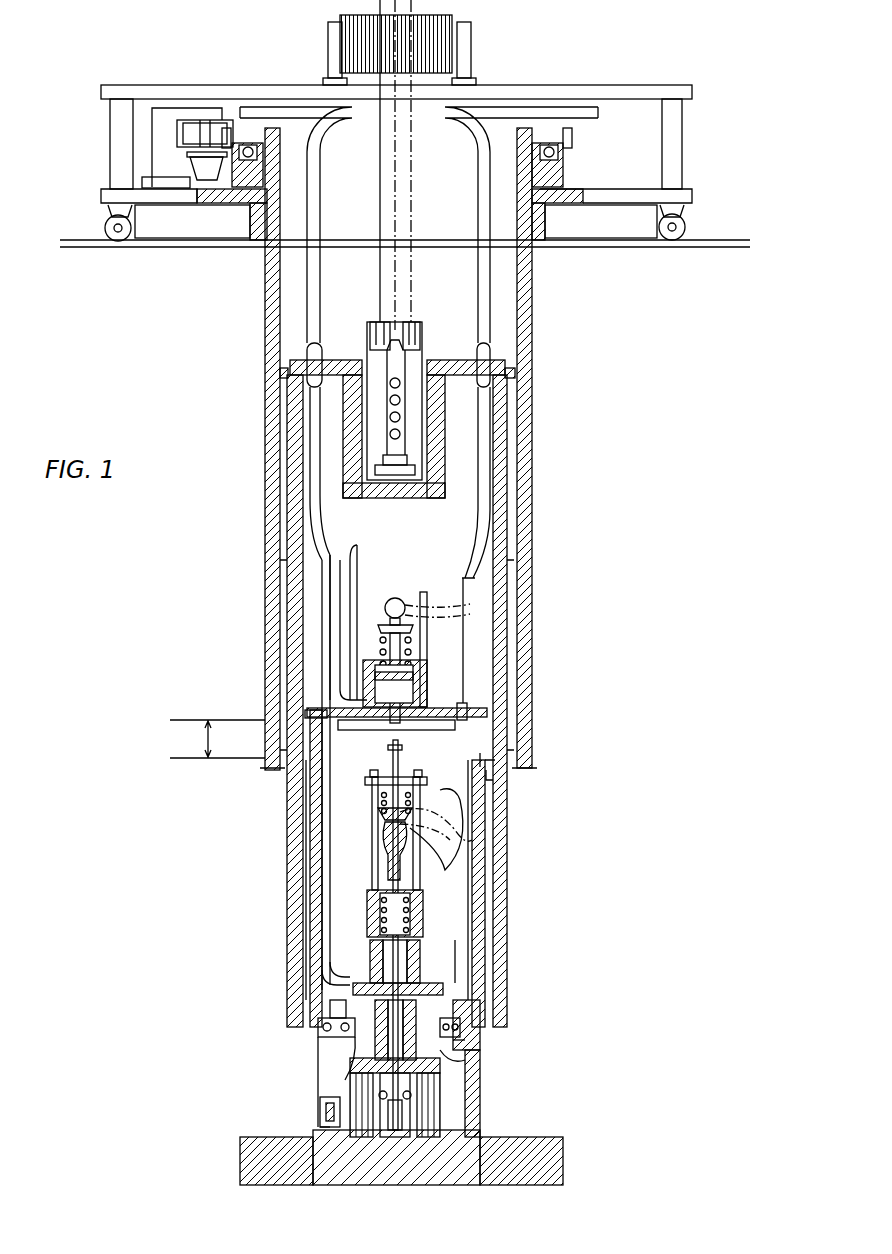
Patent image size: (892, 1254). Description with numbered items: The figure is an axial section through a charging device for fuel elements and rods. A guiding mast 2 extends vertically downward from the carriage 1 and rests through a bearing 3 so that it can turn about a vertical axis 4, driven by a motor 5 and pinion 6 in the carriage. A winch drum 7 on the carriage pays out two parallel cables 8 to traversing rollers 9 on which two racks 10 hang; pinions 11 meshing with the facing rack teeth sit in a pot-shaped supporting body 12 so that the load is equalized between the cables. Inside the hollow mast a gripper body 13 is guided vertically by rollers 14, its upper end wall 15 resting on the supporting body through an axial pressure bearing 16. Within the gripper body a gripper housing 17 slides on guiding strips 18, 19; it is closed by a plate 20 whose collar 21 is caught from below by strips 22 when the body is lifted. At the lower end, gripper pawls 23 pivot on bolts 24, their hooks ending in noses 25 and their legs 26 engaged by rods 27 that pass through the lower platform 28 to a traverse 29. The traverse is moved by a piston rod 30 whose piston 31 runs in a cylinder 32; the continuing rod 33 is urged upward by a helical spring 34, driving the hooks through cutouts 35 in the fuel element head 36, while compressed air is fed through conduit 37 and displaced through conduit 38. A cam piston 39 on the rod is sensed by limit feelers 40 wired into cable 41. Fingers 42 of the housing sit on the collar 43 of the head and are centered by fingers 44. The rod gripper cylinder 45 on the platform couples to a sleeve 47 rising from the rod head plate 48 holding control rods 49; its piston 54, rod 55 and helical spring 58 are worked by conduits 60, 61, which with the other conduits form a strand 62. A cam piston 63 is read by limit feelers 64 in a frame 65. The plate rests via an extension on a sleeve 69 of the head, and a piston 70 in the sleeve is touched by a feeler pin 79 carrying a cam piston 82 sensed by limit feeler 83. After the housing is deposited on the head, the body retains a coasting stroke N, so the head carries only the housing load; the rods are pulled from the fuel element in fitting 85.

The carriage 1 is at (680, 92).
The guiding mast 2 is at (532, 318).
The bearing 3 is at (565, 162).
The vertical axis 4 is at (395, 152).
The motor 5 is at (207, 180).
The pinion 6 is at (205, 133).
The drum 7 is at (455, 18).
The cables 8 is at (380, 222).
The traversing rollers 9 is at (378, 322).
The racks 10 is at (380, 485).
The pinions 11 is at (402, 434).
The supporting body 12 is at (415, 498).
The gripper body 13 is at (483, 830).
The rollers 14 is at (530, 376).
The upper end wall 15 is at (330, 366).
The axial pressure bearing 16 is at (440, 366).
The gripper housing 17 is at (486, 905).
The guiding strip 18 is at (488, 925).
The guiding strip 19 is at (475, 878).
The plate 20 is at (470, 706).
The collar 21 is at (468, 716).
The strips 22 is at (510, 790).
The gripper pawls 23 is at (330, 1045).
The bolts 24 is at (320, 1032).
The noses 25 is at (320, 1106).
The legs 26 is at (340, 1060).
The rods 27 is at (345, 975).
The lower platform 28 is at (340, 1010).
The traverse 29 is at (396, 743).
The piston rod 30 is at (415, 706).
The piston 31 is at (414, 676).
The cylinder 32 is at (375, 700).
The rod 33 is at (412, 653).
The helical spring 34 is at (365, 680).
The cutouts 35 is at (320, 1122).
The fuel element head 36 is at (470, 1173).
The conduit 37 is at (340, 630).
The conduit 38 is at (352, 652).
The cam piston 39 is at (395, 598).
The limit feelers 40 is at (423, 598).
The cable 41 is at (490, 525).
The fingers 42 is at (480, 1088).
The collar 43 is at (480, 1100).
The fingers 44 is at (480, 1075).
The cylinder 45 is at (425, 975).
The sleeve 47 is at (409, 1025).
The plate 48 is at (423, 1105).
The rods 49 is at (430, 1118).
The piston 54 is at (370, 950).
The rod 55 is at (383, 870).
The helical spring 58 is at (370, 910).
The conduit 60 is at (348, 598).
The conduit 61 is at (338, 566).
The strand 62 is at (318, 143).
The cam piston 63 is at (380, 846).
The limit feelers 64 is at (433, 881).
The frame 65 is at (320, 800).
The sleeve 69 is at (408, 1161).
The piston 70 is at (465, 1062).
The feeler pin 79 is at (402, 747).
The cam piston 82 is at (372, 818).
The limit feeler 83 is at (440, 845).
The fitting 85 is at (548, 1162).
The coasting stroke N is at (200, 740).